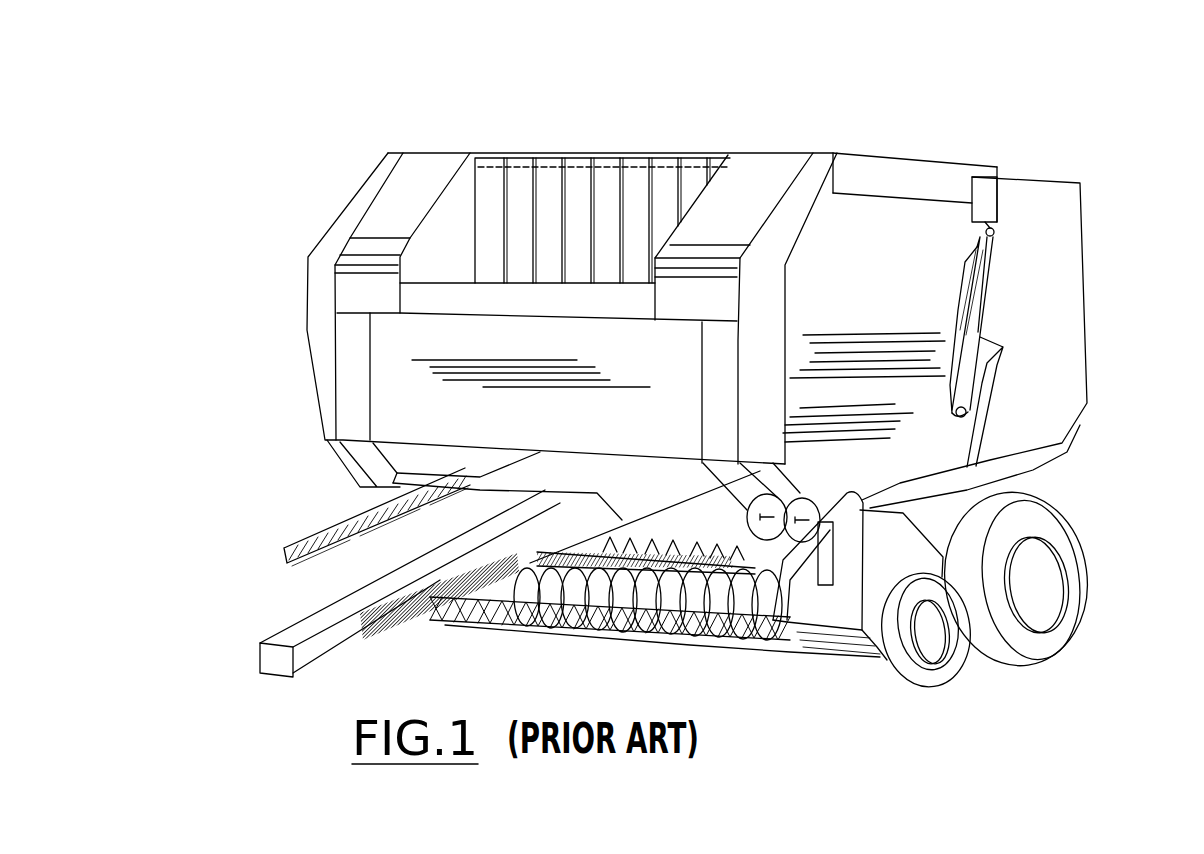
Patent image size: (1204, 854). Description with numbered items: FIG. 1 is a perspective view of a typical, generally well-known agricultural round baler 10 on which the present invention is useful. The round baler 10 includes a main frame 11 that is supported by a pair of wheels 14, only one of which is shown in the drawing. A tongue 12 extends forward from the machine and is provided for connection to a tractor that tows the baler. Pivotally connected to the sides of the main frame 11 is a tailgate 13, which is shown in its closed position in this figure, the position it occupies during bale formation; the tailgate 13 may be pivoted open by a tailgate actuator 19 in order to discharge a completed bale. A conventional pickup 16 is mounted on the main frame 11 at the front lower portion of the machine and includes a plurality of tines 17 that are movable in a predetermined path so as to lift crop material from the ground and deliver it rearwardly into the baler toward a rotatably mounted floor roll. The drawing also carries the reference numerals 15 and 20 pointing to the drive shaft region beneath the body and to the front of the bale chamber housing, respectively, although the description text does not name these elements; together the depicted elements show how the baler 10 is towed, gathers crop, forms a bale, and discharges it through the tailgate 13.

The round baler 10 is at (697, 113).
The main frame 11 is at (920, 505).
The tongue 12 is at (287, 620).
The tailgate 13 is at (1070, 232).
The wheels 14 is at (1087, 560).
The drive shaft 15 is at (340, 522).
The pickup 16 is at (725, 655).
The tines 17 is at (633, 637).
The tailgate actuator 19 is at (982, 335).
The bale chamber 20 is at (477, 247).